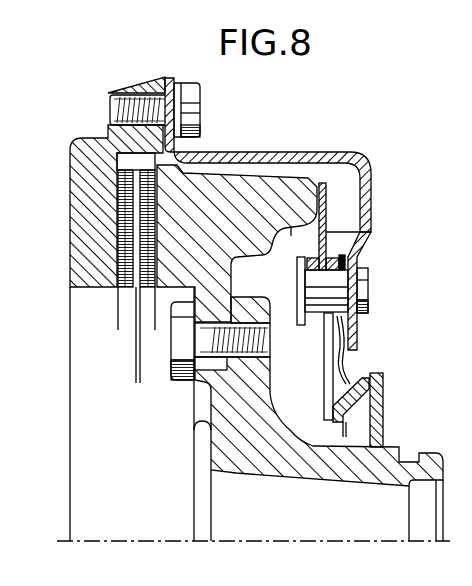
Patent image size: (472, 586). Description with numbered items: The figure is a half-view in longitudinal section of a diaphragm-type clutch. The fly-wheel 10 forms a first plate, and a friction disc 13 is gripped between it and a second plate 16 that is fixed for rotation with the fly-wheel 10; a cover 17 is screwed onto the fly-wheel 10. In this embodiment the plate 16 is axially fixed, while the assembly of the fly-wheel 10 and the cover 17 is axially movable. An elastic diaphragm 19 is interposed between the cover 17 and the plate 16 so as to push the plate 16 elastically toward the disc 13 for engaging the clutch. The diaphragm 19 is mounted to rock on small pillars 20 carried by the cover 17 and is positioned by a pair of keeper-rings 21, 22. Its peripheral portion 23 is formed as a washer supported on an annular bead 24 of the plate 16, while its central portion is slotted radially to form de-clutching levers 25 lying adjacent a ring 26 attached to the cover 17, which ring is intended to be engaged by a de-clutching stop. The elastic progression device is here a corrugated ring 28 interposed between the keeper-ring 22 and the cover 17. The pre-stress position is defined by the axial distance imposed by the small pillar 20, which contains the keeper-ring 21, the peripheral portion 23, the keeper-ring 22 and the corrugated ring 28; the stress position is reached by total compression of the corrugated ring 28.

The fly-wheel 10 is at (82, 188).
The friction disc 13 is at (140, 244).
The second plate 16 is at (247, 190).
The cover 17 is at (372, 195).
The elastic diaphragm 19 is at (337, 338).
The small pillar 20 is at (341, 287).
The keeper-ring 21 is at (316, 266).
The keeper-ring 22 is at (334, 258).
The peripheral portion of the diaphragm 23 is at (346, 233).
The annular bead 24 is at (316, 192).
The de-clutching levers 25 is at (328, 383).
The ring 26 is at (384, 414).
The corrugated ring 28 is at (346, 257).